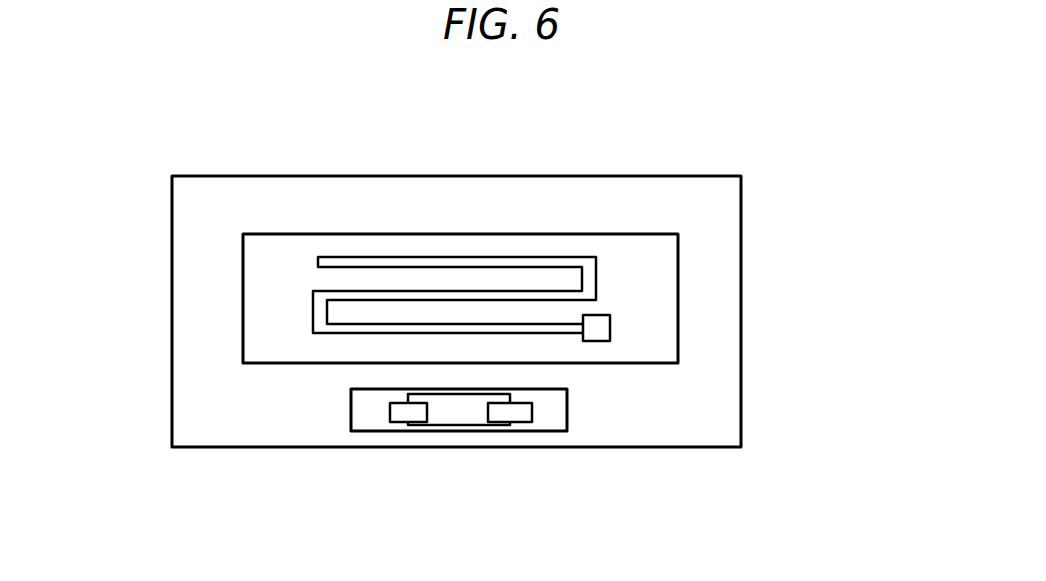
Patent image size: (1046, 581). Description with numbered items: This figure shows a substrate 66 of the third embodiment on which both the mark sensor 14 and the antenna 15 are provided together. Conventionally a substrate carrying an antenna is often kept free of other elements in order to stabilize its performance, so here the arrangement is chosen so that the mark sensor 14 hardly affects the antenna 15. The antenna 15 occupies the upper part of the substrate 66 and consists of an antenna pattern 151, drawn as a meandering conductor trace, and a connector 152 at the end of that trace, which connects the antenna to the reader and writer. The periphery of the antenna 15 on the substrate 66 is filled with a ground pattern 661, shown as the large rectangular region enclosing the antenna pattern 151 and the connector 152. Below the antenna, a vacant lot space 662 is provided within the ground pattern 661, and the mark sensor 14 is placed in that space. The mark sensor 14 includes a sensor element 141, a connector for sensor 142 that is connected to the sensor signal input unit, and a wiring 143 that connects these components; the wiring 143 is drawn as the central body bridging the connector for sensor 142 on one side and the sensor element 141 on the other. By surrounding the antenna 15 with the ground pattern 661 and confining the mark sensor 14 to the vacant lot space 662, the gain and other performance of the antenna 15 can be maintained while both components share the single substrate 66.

The substrate 66 is at (685, 177).
The ground pattern 661 is at (714, 348).
The vacant lot space 662 is at (557, 410).
The antenna 15 is at (535, 113).
The antenna pattern 151 is at (371, 257).
The connector 152 is at (590, 323).
The mark sensor 14 is at (543, 512).
The sensor element 141 is at (522, 412).
The connector for sensor 142 is at (400, 412).
The wiring 143 is at (460, 419).